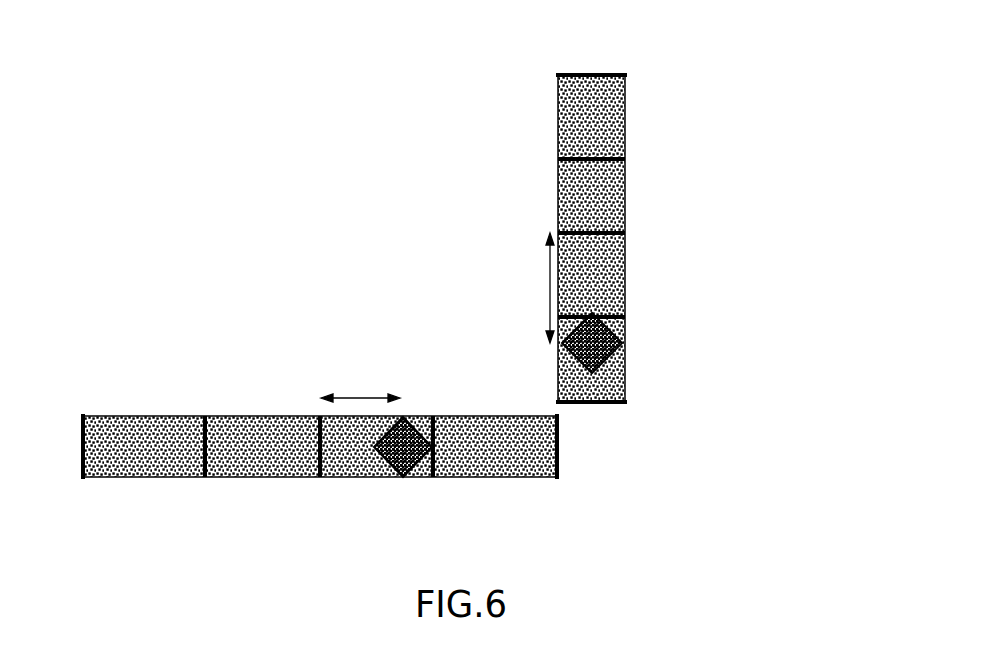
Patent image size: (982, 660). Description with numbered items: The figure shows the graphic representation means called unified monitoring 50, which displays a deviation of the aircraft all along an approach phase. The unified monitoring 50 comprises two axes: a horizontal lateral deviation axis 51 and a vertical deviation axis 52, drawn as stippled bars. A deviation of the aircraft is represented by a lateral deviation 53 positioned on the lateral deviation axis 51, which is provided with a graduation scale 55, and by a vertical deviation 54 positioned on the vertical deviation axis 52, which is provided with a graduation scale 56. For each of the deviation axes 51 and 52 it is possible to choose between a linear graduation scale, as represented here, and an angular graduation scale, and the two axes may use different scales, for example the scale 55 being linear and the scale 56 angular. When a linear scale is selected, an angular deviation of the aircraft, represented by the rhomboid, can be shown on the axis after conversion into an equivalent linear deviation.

The unified monitoring 50 is at (313, 150).
The lateral deviation axis 51 is at (341, 495).
The vertical deviation axis 52 is at (676, 270).
The lateral deviation 53 is at (347, 392).
The vertical deviation 54 is at (547, 290).
The graduation scale 55 is at (560, 522).
The graduation scale 56 is at (707, 412).